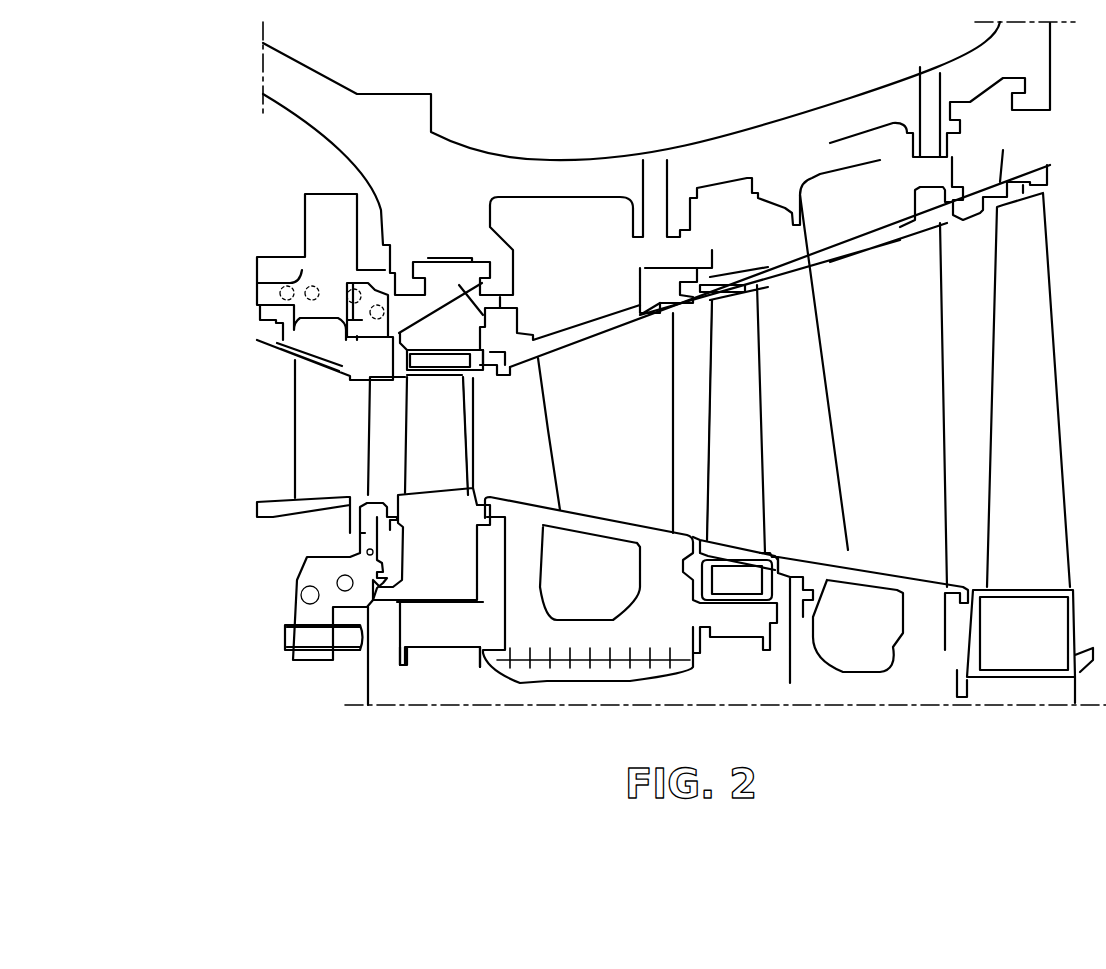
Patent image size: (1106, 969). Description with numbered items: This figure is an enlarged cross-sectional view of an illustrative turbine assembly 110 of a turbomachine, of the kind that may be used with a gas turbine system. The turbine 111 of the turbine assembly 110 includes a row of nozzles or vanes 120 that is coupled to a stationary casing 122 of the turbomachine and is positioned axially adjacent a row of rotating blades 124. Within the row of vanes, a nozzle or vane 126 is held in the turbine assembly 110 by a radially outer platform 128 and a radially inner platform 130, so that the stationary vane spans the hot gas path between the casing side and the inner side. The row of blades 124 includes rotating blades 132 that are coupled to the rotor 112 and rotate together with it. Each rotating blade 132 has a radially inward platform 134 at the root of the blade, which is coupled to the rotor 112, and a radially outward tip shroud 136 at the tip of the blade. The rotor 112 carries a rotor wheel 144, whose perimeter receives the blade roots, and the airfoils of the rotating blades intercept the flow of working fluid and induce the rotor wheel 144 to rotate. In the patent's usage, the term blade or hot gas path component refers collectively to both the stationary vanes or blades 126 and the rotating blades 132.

The turbine assembly 110 is at (537, 147).
The turbine 111 is at (800, 287).
The rotor 112 is at (738, 673).
The row of nozzles or vanes 120 is at (605, 344).
The stationary casing 122 is at (447, 220).
The row of rotating blades 124 is at (728, 347).
The nozzle or vane 126 is at (587, 425).
The radially outer platform 128 is at (590, 368).
The radially inner platform 130 is at (650, 520).
The rotating blade 132 is at (735, 390).
The radially inward platform 134 is at (728, 545).
The radially outward tip shroud 136 is at (737, 300).
The rotor wheel 144 is at (720, 645).